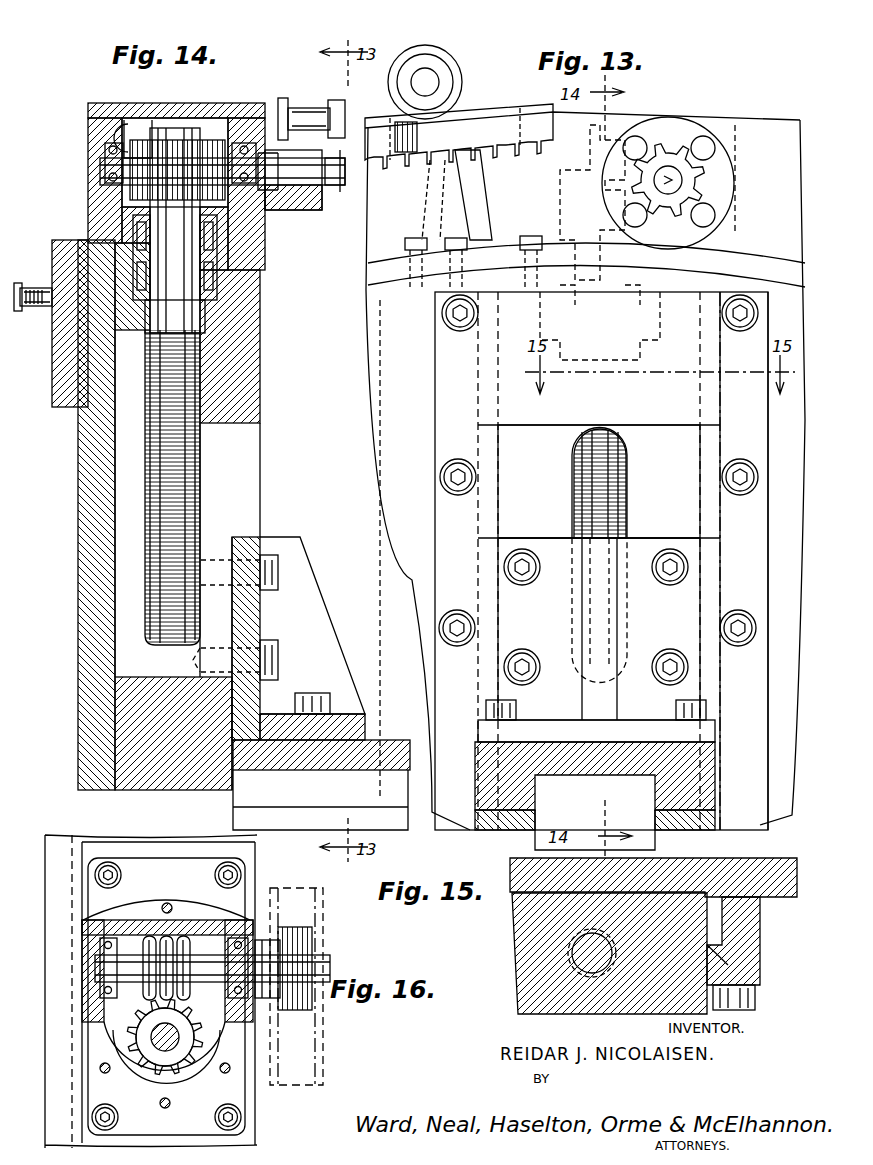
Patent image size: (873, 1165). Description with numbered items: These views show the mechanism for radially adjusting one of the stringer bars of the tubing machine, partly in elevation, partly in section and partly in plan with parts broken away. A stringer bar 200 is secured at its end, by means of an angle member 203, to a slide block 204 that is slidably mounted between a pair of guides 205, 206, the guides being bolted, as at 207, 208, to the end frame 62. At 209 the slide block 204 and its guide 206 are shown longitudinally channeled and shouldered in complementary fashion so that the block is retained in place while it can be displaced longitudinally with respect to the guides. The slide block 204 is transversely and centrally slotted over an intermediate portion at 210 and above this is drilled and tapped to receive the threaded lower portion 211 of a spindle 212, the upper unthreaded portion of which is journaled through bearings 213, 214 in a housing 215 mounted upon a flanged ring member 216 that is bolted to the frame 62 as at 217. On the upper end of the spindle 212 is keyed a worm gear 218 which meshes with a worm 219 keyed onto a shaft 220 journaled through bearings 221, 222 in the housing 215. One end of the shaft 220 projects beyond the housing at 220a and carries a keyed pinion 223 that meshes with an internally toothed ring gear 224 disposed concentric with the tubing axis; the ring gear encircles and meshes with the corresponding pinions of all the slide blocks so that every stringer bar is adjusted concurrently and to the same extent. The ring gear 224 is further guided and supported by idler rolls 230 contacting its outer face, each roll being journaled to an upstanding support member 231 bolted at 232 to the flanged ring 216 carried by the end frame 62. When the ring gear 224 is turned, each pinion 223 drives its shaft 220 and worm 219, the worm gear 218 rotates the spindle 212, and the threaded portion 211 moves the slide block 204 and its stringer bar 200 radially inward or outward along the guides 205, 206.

In FIG. 14, the end frame 62 is at (85, 494).
In FIG. 15, the end frame 62 is at (776, 858).
In FIG. 14, the stringer bar 200 is at (252, 792).
In FIG. 13, the stringer bar 200 is at (478, 805).
In FIG. 14, the angle member 203 is at (300, 594).
In FIG. 13, the angle member 203 is at (548, 548).
In FIG. 14, the slide block 204 is at (248, 346).
In FIG. 13, the slide block 204 is at (657, 425).
In FIG. 15, the slide block 204 is at (512, 950).
In FIG. 13, the guide 205 is at (435, 426).
In FIG. 13, the guide 206 is at (748, 545).
In FIG. 15, the guide 206 is at (760, 938).
In FIG. 13, the bolt 207 is at (442, 314).
In FIG. 13, the bolt 208 is at (750, 478).
In FIG. 15, the bolt 208 is at (755, 996).
In FIG. 15, the channel and shoulder 209 is at (728, 965).
In FIG. 14, the slot 210 is at (258, 446).
In FIG. 13, the slot 210 is at (572, 470).
In FIG. 14, the threaded lower portion 211 is at (200, 497).
In FIG. 13, the threaded lower portion 211 is at (578, 490).
In FIG. 14, the spindle 212 is at (235, 322).
In FIG. 16, the spindle 212 is at (180, 1018).
In FIG. 15, the spindle 212 is at (590, 975).
In FIG. 14, the bearing 213 is at (215, 262).
In FIG. 14, the bearing 214 is at (120, 235).
In FIG. 14, the housing 215 is at (88, 132).
In FIG. 16, the housing 215 is at (180, 850).
In FIG. 14, the flanged ring member 216 is at (60, 405).
In FIG. 13, the flanged ring member 216 is at (368, 280).
In FIG. 16, the flanged ring member 216 is at (58, 900).
In FIG. 14, the bolt 217 is at (28, 330).
In FIG. 14, the worm gear 218 is at (105, 185).
In FIG. 16, the worm gear 218 is at (150, 1065).
In FIG. 14, the worm 219 is at (180, 140).
In FIG. 16, the worm 219 is at (172, 936).
In FIG. 14, the shaft 220 is at (105, 170).
In FIG. 16, the shaft 220 is at (95, 968).
In FIG. 14, the projecting shaft end 220a is at (340, 192).
In FIG. 14, the bearing 221 is at (133, 120).
In FIG. 14, the bearing 222 is at (236, 143).
In FIG. 14, the pinion 223 is at (296, 210).
In FIG. 13, the pinion 223 is at (676, 142).
In FIG. 16, the pinion 223 is at (312, 940).
In FIG. 14, the ring gear 224 is at (300, 105).
In FIG. 13, the ring gear 224 is at (462, 146).
In FIG. 13, the idler roll 230 is at (432, 46).
In FIG. 13, the support member 231 is at (470, 160).
In FIG. 13, the bolt 232 is at (440, 236).